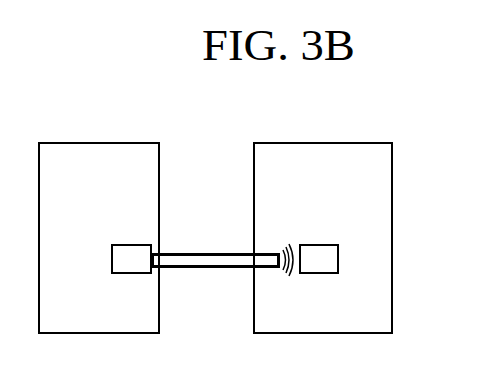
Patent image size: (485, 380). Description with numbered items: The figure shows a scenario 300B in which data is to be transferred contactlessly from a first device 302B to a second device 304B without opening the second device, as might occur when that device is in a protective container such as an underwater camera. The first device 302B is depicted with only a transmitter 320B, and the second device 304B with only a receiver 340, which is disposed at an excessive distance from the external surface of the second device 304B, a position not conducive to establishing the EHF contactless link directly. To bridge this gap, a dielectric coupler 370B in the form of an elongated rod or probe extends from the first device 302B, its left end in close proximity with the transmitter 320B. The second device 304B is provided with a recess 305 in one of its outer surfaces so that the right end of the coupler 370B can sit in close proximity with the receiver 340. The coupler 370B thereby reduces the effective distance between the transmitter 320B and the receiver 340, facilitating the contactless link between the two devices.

The scenario 300B is at (155, 94).
The first device 302B is at (132, 322).
The second device 304B is at (360, 322).
The transmitter 320B is at (133, 245).
The receiver 340 is at (310, 245).
The dielectric coupler 370B is at (187, 253).
The recess 305 is at (250, 269).